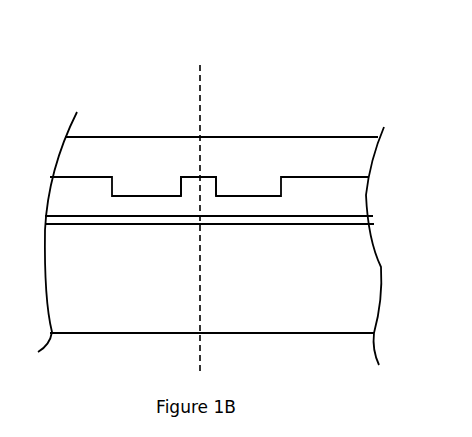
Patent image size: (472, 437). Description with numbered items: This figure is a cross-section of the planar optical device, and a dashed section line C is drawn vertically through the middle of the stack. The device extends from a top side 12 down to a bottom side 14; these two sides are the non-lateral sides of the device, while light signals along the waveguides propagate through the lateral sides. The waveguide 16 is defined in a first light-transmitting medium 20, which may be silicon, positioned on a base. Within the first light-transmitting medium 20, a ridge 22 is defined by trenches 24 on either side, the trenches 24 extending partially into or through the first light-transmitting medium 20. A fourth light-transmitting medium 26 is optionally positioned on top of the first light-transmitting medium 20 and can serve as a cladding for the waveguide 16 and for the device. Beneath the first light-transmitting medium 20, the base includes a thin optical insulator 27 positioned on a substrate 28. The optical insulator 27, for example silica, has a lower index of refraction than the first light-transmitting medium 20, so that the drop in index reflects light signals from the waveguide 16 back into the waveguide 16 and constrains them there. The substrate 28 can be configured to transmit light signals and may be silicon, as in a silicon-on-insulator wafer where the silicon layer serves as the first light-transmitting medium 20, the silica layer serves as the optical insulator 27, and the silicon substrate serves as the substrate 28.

The top side 12 is at (136, 137).
The bottom side 14 is at (110, 335).
The waveguide 16 is at (225, 172).
The first light-transmitting medium 20 is at (352, 196).
The ridge 22 is at (182, 177).
The trenches 24 is at (134, 198).
The fourth light-transmitting medium 26 is at (336, 148).
The optical insulator 27 is at (361, 220).
The substrate 28 is at (353, 282).
The section line C is at (200, 77).